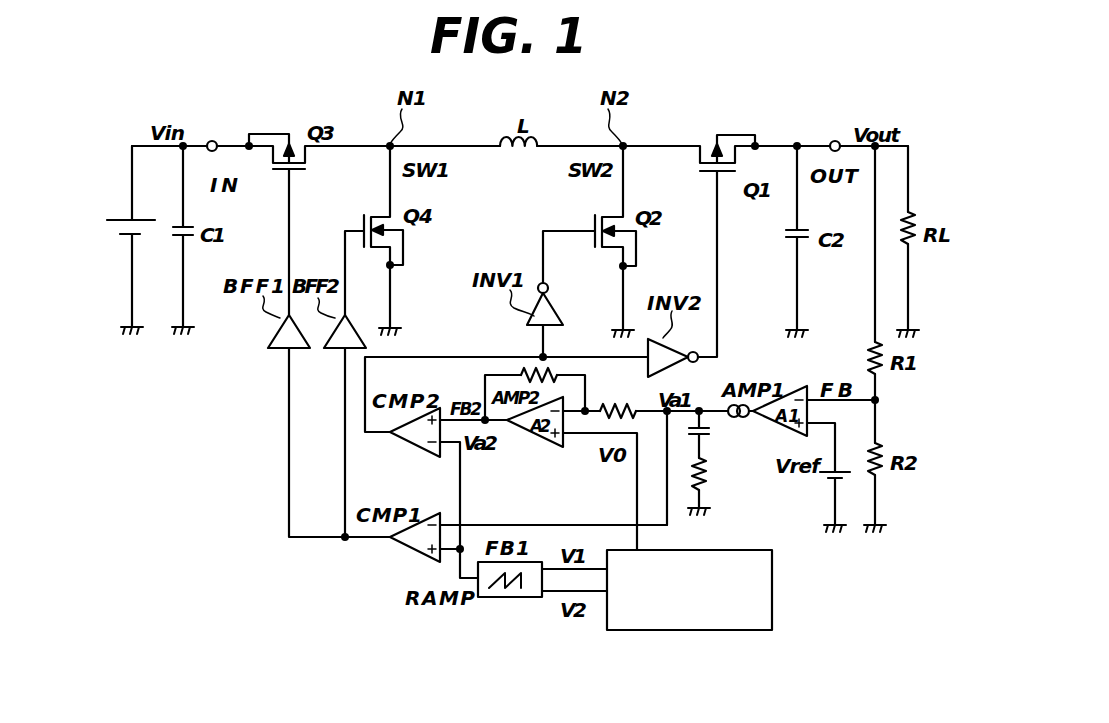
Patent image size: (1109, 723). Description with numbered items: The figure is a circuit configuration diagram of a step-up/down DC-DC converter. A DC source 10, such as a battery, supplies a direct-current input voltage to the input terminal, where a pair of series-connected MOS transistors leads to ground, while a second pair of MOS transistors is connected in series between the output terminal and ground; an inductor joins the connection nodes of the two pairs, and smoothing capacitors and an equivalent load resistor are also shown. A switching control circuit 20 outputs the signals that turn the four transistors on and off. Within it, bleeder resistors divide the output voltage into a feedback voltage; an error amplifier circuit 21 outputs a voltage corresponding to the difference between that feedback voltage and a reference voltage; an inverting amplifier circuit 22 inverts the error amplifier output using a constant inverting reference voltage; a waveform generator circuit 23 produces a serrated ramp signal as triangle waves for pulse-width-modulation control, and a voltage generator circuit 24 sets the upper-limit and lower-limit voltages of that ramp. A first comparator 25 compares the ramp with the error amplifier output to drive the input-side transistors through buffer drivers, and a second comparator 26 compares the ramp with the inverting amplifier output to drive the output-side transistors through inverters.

The DC source 10 is at (118, 204).
The switching control circuit 20 is at (230, 365).
The error amplifier circuit 21 is at (758, 437).
The inverting amplifier circuit 22 is at (532, 441).
The waveform generator circuit 23 is at (509, 598).
The voltage generator circuit 24 is at (773, 592).
The first comparator 25 is at (401, 546).
The second comparator 26 is at (414, 447).